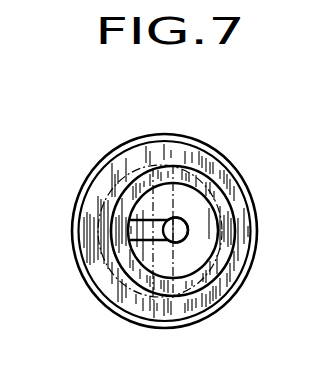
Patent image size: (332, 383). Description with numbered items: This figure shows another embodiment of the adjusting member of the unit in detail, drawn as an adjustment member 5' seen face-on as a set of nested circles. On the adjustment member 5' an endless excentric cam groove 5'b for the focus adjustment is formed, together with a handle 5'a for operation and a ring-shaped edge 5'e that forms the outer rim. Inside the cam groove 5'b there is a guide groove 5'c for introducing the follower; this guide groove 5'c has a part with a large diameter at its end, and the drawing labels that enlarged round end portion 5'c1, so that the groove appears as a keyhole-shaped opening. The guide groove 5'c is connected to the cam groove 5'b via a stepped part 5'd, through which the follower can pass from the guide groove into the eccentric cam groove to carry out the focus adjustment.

The adjustment member 5' is at (165, 206).
The handle 5'a is at (160, 266).
The endless excentric cam groove 5'b is at (158, 258).
The guide groove 5'c is at (116, 260).
The circular portion of keyhole slot 5'c1 is at (229, 227).
The stepped part 5'd is at (124, 230).
The ring-shaped edge 5'e is at (164, 250).